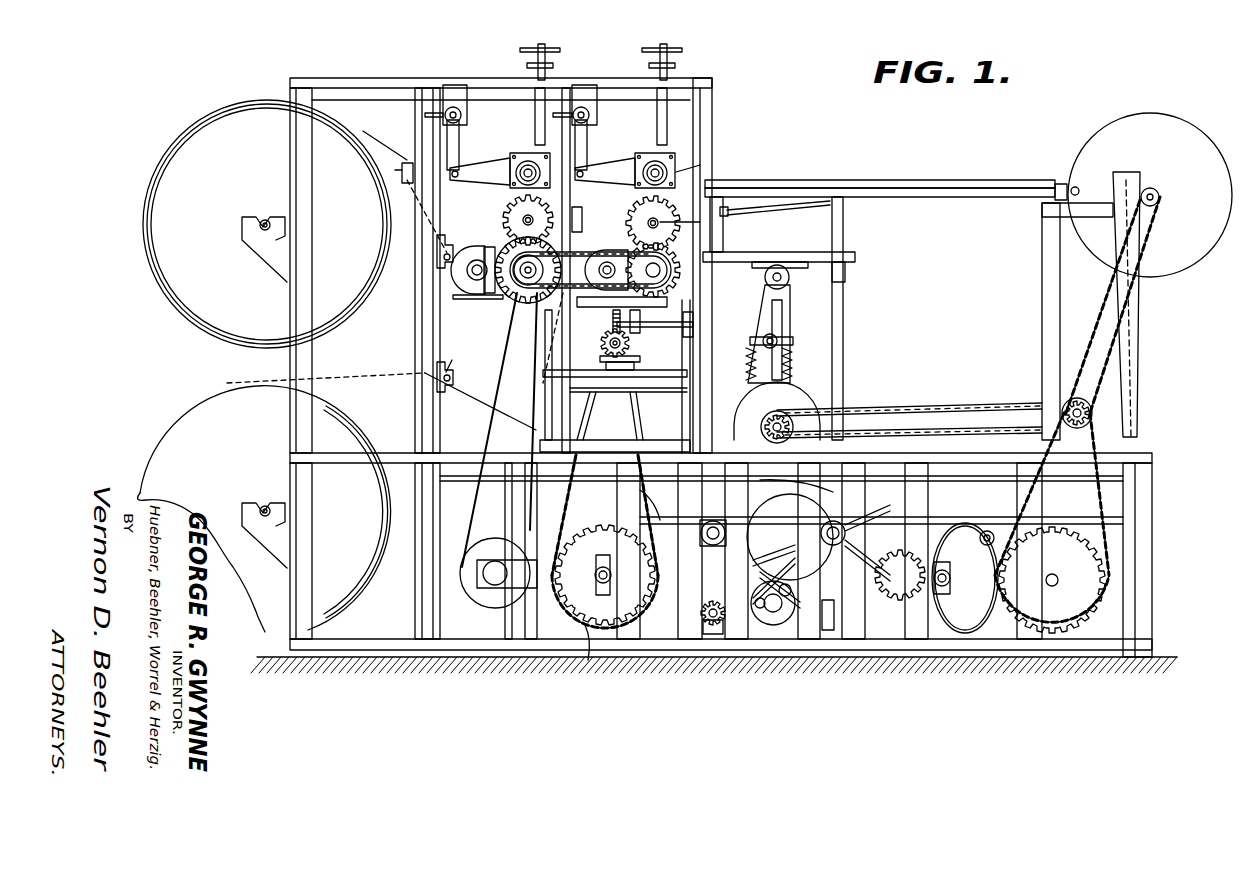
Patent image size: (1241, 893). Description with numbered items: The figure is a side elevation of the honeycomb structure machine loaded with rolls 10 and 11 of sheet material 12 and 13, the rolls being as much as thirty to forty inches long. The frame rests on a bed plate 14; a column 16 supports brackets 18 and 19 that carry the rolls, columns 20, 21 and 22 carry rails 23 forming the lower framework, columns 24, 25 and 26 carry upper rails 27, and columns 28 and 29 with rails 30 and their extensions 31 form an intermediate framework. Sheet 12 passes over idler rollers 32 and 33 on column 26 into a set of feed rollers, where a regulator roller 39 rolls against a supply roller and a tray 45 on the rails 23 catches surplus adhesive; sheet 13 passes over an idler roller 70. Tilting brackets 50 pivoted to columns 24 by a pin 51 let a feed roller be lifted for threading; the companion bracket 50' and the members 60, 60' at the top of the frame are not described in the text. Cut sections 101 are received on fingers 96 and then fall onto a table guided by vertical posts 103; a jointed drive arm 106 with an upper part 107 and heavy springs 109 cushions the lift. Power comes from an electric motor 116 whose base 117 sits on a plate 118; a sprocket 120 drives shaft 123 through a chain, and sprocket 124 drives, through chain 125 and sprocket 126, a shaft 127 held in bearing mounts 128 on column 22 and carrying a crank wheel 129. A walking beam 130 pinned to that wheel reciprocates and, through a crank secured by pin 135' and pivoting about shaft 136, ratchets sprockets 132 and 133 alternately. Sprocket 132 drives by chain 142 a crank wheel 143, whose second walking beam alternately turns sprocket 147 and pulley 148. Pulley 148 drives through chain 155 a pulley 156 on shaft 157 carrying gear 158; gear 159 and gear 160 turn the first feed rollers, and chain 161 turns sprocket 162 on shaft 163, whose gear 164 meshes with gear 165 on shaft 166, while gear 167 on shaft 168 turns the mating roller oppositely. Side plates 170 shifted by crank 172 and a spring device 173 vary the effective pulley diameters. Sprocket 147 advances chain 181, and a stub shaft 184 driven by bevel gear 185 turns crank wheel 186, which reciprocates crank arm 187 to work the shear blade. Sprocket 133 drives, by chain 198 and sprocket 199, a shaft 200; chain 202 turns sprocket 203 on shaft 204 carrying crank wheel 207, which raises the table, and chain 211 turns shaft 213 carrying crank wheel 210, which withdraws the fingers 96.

The roll 10 is at (150, 266).
The roll 11 is at (165, 441).
The sheet material 12 is at (405, 185).
The sheet material 13 is at (372, 378).
The bed plate 14 is at (378, 648).
The column 16 is at (299, 539).
The bracket 18 is at (266, 250).
The bracket 19 is at (268, 540).
The column 20 is at (428, 624).
The column 21 is at (1138, 573).
The column 22 is at (690, 655).
The rails 23 is at (455, 322).
The column 24 is at (545, 436).
The column 25 is at (670, 428).
The column 26 is at (415, 334).
The upper rails 27 is at (382, 86).
The column 28 is at (1135, 326).
The column 29 is at (1050, 306).
The rails 30 is at (955, 180).
The extensions 31 is at (1048, 214).
The idler roller 32 is at (402, 193).
The idler roller 33 is at (452, 255).
The regulator roller 39 is at (458, 278).
The tray 45 is at (463, 305).
The tilting bracket 50 is at (480, 162).
The link plate 50' is at (605, 161).
The pin 51 is at (455, 84).
The hand wheel 60 is at (536, 81).
The hand wheel 60' is at (657, 81).
The idler roller 70 is at (443, 386).
The fingers 96 is at (783, 200).
The section 101 is at (786, 339).
The vertical post 103 is at (843, 338).
The jointed drive arm 106 is at (805, 300).
The upper part 107 is at (786, 316).
The heavy springs 109 is at (790, 367).
The electric motor 116 is at (775, 625).
The base 117 is at (830, 630).
The plate 118 is at (782, 620).
The sprocket 120 is at (784, 622).
The shaft 123 is at (705, 613).
The sprocket 124 is at (705, 620).
The chain 125 is at (778, 518).
The sprocket 126 is at (850, 540).
The shaft 127 is at (845, 525).
The bearing mounts 128 is at (835, 500).
The crank wheel 129 is at (795, 480).
The walking beam 130 is at (600, 524).
The sprocket 132 is at (944, 525).
The sprocket 133 is at (1088, 603).
The pin 135' is at (987, 521).
The shaft 136 is at (947, 580).
The chain 142 is at (940, 634).
The crank wheel 143 is at (645, 492).
The sprocket 147 is at (590, 625).
The pulley 148 is at (478, 576).
The chain 155 is at (452, 360).
The pulley 156 is at (503, 246).
The shaft 157 is at (640, 255).
The gear 158 is at (612, 330).
The gear 159 is at (505, 205).
The gear 160 is at (524, 148).
The chain 161 is at (660, 250).
The sprocket 162 is at (636, 288).
The shaft 163 is at (765, 278).
The gear 164 is at (668, 307).
The gear 165 is at (640, 216).
The shaft 166 is at (700, 229).
The gear 167 is at (646, 150).
The shaft 168 is at (676, 175).
The side plate 170 is at (598, 544).
The crank 172 is at (497, 562).
The spring device 173 is at (512, 430).
The chain 181 is at (630, 409).
The stub shaft 184 is at (637, 345).
The bevel gear 185 is at (603, 344).
The crank wheel 186 is at (696, 325).
The crank arm 187 is at (712, 119).
The chain 198 is at (1093, 498).
The sprocket 199 is at (1090, 425).
The shaft 200 is at (1088, 413).
The chain 202 is at (972, 403).
The sprocket 203 is at (774, 414).
The shaft 204 is at (763, 420).
The crank wheel 207 is at (800, 395).
The crank wheel 210 is at (1068, 149).
The chain 211 is at (1077, 366).
The shaft 213 is at (1160, 200).